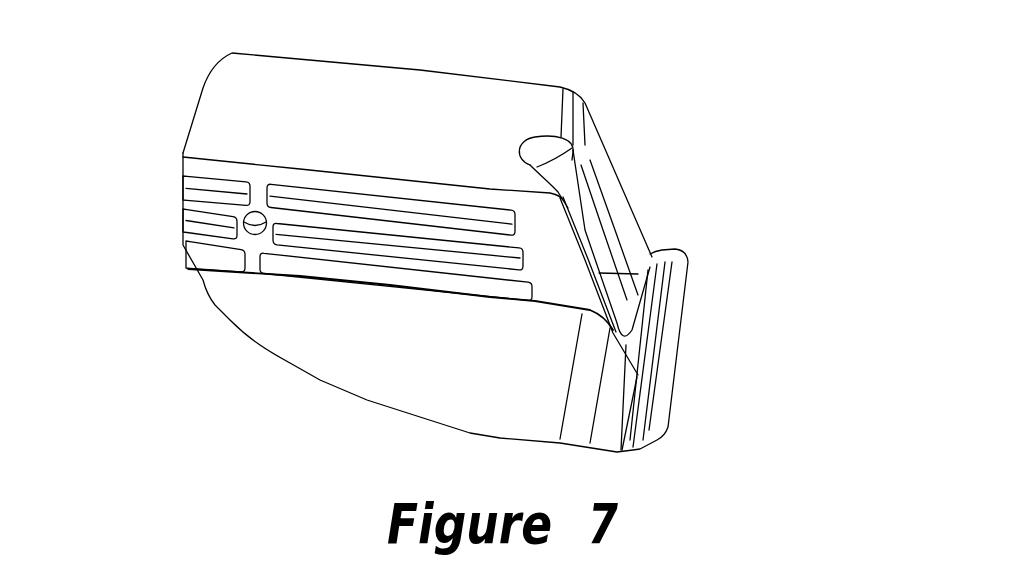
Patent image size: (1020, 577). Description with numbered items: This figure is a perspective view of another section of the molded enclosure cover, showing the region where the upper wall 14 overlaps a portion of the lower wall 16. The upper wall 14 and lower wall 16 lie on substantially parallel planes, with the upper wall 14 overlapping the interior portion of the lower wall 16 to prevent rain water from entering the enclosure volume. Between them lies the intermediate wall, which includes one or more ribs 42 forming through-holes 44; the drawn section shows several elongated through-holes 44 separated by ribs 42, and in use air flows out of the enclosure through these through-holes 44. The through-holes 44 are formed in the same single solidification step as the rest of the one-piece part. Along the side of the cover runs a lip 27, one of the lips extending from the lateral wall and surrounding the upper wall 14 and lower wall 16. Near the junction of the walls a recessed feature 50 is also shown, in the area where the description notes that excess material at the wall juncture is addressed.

The upper wall 14 is at (478, 133).
The lower wall 16 is at (613, 410).
The lip 27 is at (670, 330).
The rib 42 is at (207, 208).
The through-hole 44 is at (197, 183).
The latch notch 50 is at (558, 173).